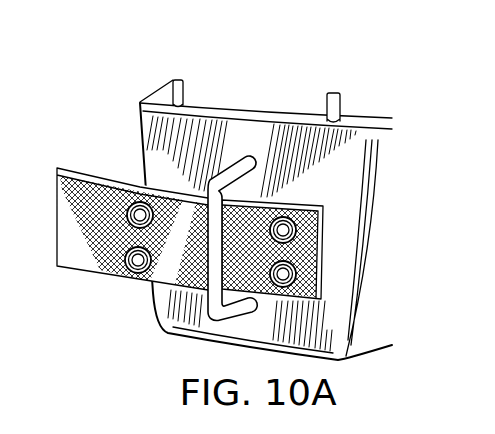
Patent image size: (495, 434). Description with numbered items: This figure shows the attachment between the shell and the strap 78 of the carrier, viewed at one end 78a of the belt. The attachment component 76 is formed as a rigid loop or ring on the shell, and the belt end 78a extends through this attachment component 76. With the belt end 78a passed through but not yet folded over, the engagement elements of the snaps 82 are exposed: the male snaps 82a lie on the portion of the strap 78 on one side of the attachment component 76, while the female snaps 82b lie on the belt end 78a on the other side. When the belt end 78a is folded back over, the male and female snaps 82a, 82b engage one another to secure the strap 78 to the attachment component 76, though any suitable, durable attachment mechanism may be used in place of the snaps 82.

The attachment component 76 is at (237, 160).
The strap 78 is at (75, 195).
The belt end 78a is at (320, 268).
The snaps 82 is at (110, 224).
The male snap 82a is at (129, 262).
The female snap 82b is at (287, 270).